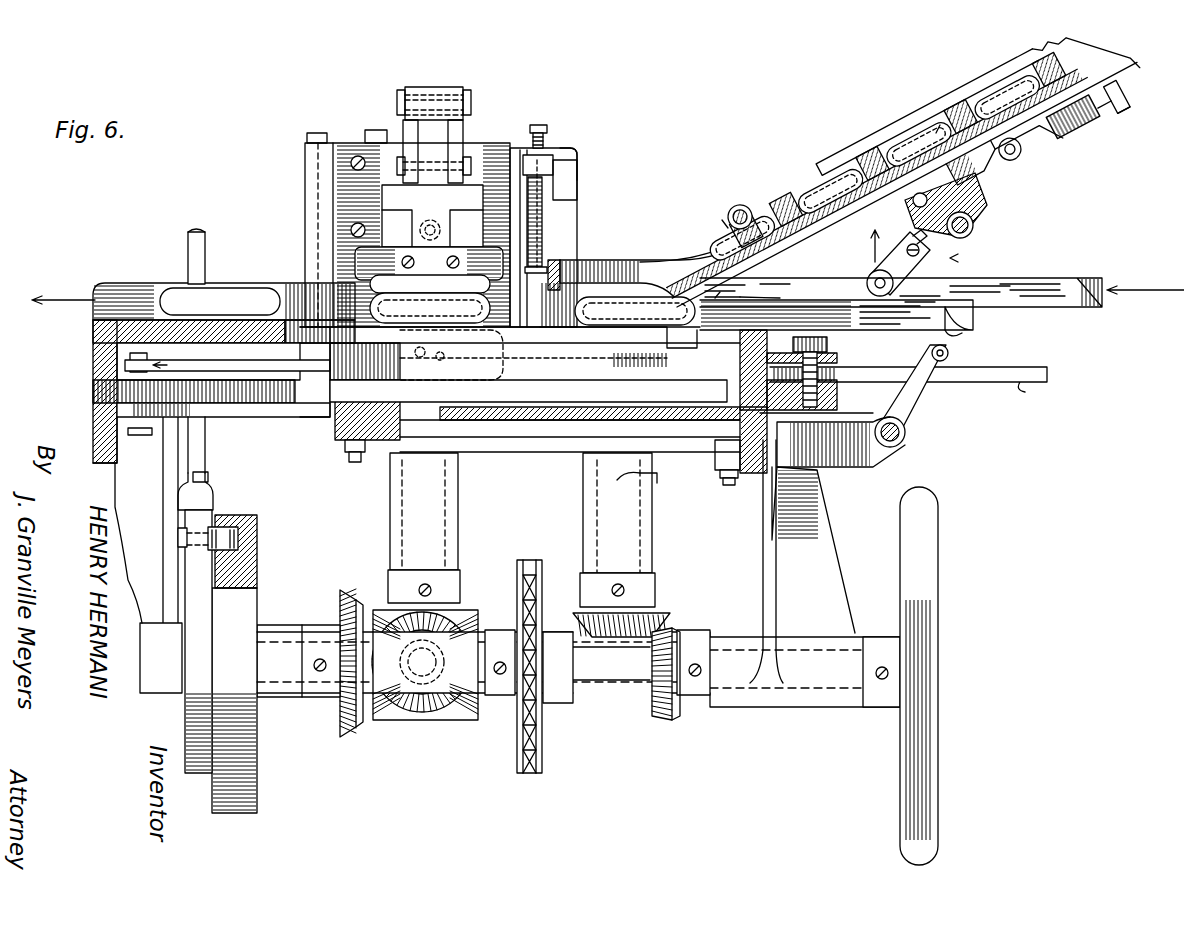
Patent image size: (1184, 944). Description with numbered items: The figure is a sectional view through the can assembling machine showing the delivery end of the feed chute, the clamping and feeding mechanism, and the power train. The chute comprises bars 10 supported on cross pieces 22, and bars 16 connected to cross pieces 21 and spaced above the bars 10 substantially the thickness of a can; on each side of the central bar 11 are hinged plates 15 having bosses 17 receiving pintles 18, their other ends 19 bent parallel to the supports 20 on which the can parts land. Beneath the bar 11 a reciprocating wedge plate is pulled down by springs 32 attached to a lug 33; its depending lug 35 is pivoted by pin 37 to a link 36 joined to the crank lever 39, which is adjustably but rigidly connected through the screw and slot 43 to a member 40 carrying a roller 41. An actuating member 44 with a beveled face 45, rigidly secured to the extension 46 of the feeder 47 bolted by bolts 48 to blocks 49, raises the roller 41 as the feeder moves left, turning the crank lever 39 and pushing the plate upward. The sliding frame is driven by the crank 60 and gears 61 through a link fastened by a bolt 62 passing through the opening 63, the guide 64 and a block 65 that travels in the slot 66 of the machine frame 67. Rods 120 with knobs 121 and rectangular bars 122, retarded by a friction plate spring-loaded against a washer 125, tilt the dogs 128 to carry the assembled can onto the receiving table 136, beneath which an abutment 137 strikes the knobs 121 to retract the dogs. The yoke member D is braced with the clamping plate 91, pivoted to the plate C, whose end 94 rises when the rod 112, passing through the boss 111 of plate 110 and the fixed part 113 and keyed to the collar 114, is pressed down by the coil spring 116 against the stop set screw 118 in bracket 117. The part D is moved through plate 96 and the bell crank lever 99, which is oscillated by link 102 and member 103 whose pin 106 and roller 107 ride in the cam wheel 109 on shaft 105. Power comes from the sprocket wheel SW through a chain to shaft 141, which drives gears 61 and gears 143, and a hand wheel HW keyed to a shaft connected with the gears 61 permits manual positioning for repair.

The bars 10 is at (1058, 108).
The bar 11 is at (980, 66).
The hinged plates 15 is at (632, 265).
The bars 16 is at (830, 158).
The bosses 17 is at (742, 205).
The pintles 18 is at (722, 220).
The ends of plates 19 is at (592, 268).
The supports 20 is at (557, 338).
The cross pieces 21 is at (775, 185).
The cross pieces 22 is at (850, 292).
The springs 32 is at (1065, 118).
The lug 33 is at (1105, 92).
The depending lug 35 is at (1048, 130).
The link 36 is at (938, 125).
The pin 37 is at (1022, 162).
The crank lever 39 is at (950, 258).
The member 40 is at (973, 227).
The roller 41 is at (868, 287).
The screw and slot 43 is at (906, 243).
The actuating member 44 is at (942, 278).
The beveled face 45 is at (967, 334).
The extension 46 is at (977, 320).
The feeder 47 is at (800, 329).
The bolts 48 is at (722, 294).
The blocks 49 is at (670, 347).
The crank 60 is at (608, 474).
The gears 61 is at (665, 714).
The bolt 62 is at (357, 462).
The opening 63 is at (340, 430).
The guide 64 is at (313, 394).
The block 65 is at (400, 456).
The slot 66 is at (228, 410).
The frame 67 is at (580, 414).
The clamping plate 91 is at (540, 338).
The end 94 is at (300, 284).
The plate 96 is at (405, 126).
The bell crank lever 99 is at (428, 102).
The link 102 is at (200, 250).
The member 103 is at (195, 618).
The shaft 105 is at (268, 642).
The pin 106 is at (178, 535).
The roller 107 is at (258, 506).
The cam wheel 109 is at (254, 769).
The plate 110 is at (503, 190).
The offset boss 111 is at (556, 198).
The rod 112 is at (545, 264).
The fixed part 113 is at (600, 287).
The collar 114 is at (558, 262).
The coil spring 116 is at (545, 212).
The bracket 117 is at (561, 148).
The set screw 118 is at (545, 125).
The rods 120 is at (238, 368).
The knobs 121 is at (135, 372).
The rectangular bars 122 is at (1010, 378).
The washer 125 is at (832, 348).
The dogs 128 is at (533, 376).
The receiving table 136 is at (105, 321).
The abutment 137 is at (128, 362).
The shaft 141 is at (637, 678).
The gears 143 is at (345, 735).
The plate C is at (871, 129).
The yoke member D is at (578, 160).
The hand wheel HW is at (925, 618).
The sprocket wheel SW is at (560, 783).